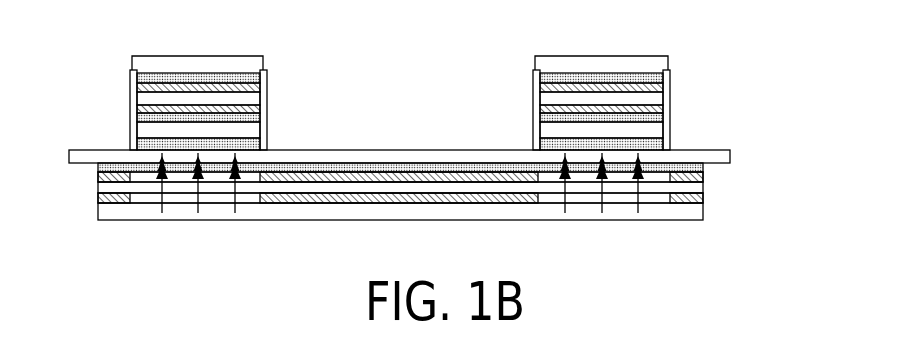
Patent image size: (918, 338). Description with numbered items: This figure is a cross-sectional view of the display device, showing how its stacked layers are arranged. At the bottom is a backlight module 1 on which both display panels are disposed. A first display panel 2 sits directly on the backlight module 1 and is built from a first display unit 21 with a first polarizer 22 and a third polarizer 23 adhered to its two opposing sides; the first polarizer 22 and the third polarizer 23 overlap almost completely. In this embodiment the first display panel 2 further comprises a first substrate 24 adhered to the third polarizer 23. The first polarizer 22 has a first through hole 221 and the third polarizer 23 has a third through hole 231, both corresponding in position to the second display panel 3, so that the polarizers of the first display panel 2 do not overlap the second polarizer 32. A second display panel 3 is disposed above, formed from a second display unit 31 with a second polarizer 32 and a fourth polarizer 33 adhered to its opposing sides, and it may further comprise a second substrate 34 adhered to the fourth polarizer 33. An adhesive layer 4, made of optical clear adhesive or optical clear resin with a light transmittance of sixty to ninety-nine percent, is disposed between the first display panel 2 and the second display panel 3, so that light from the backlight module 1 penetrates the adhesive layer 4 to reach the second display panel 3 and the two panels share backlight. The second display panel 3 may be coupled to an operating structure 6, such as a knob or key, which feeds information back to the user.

The backlight module 1 is at (103, 212).
The first display panel 2 is at (792, 150).
The first display unit 21 is at (703, 196).
The first polarizer 22 is at (703, 213).
The third polarizer 23 is at (703, 174).
The first substrate 24 is at (730, 155).
The first through hole 221 is at (143, 197).
The third through hole 231 is at (250, 182).
The second display panel 3 is at (62, 57).
The second display unit 31 is at (137, 98).
The second polarizer 32 is at (137, 108).
The fourth polarizer 33 is at (137, 85).
The second substrate 34 is at (138, 64).
The adhesive layer 4 is at (266, 147).
The operating structure 6 is at (268, 101).